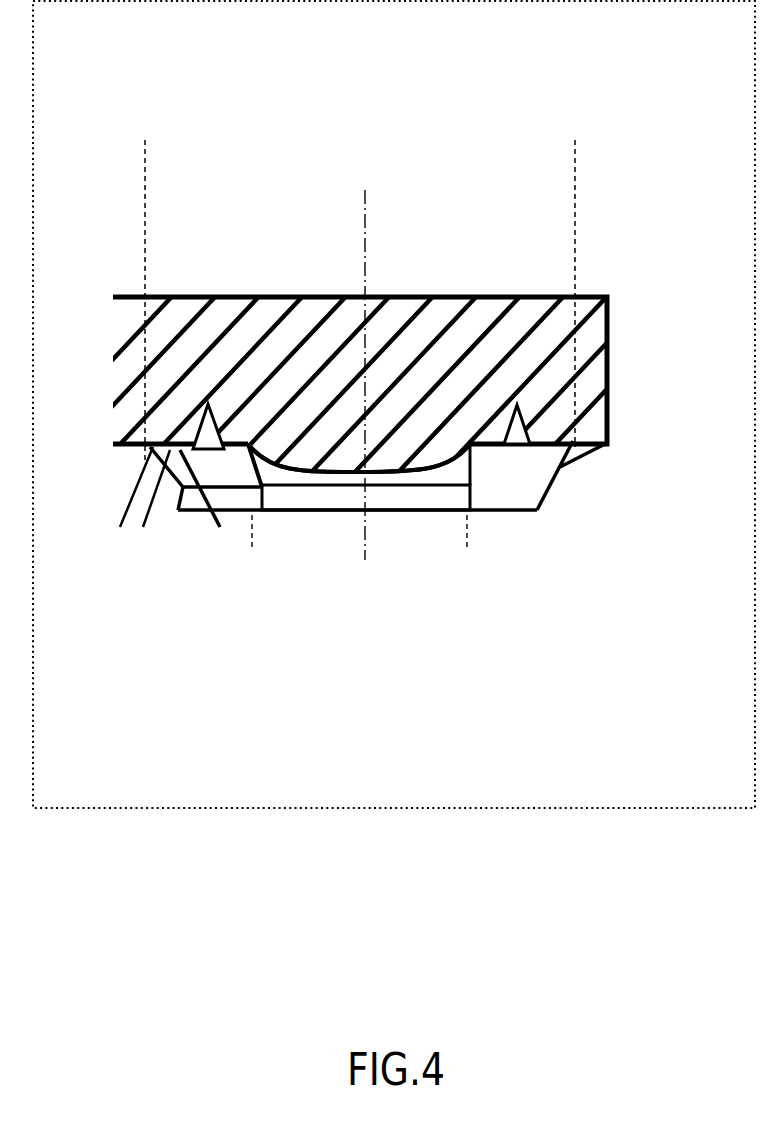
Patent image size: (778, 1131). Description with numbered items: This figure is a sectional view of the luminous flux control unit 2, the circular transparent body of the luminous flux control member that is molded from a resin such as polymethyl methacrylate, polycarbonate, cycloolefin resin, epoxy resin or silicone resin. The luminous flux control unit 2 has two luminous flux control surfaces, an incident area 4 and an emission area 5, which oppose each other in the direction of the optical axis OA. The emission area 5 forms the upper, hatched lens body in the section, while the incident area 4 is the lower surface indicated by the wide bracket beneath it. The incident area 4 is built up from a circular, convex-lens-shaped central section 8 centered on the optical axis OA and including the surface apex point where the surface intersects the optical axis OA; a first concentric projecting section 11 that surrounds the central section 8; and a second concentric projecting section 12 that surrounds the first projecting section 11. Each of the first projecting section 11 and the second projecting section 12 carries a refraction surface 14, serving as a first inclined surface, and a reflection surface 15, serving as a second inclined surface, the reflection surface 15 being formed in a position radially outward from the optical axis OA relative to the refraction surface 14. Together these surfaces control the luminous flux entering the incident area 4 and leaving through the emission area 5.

The luminous flux control unit 2 is at (145, 140).
The optical axis OA is at (350, 243).
The emission area 5 is at (470, 295).
The central section 8 is at (470, 549).
The first projecting section 11 is at (500, 446).
The second projecting section 12 is at (573, 457).
The refraction surface 14 is at (220, 527).
The reflection surface 15 is at (143, 527).
The incident area 4 is at (318, 613).